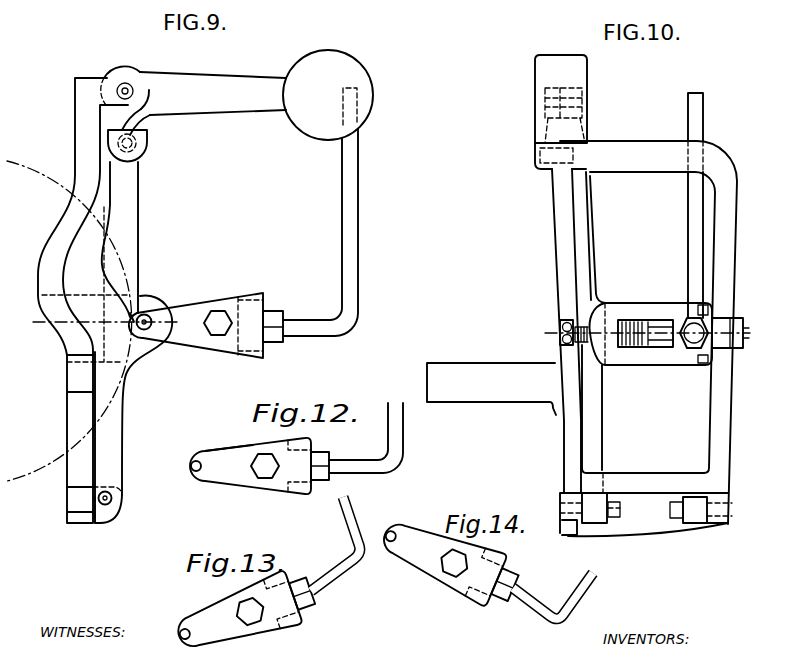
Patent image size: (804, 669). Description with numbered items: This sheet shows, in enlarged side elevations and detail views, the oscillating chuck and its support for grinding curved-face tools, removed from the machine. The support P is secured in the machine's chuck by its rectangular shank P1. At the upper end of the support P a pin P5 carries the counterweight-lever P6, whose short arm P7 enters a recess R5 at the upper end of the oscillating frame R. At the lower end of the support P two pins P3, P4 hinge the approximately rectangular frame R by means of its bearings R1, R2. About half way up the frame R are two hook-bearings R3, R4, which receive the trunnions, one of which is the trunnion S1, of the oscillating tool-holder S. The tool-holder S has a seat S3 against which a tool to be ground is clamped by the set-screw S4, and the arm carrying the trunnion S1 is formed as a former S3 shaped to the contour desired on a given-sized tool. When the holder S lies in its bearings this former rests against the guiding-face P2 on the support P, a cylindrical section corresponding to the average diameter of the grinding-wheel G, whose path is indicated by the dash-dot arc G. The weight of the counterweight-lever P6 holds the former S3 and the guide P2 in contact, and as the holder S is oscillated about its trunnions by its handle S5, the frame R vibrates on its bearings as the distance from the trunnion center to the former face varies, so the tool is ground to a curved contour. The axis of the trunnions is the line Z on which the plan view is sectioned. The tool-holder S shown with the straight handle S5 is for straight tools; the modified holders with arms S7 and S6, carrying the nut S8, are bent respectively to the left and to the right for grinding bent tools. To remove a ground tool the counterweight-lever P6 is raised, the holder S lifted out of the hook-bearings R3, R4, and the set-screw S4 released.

In FIG. 9, the support P is at (84, 300).
In FIG. 10, the support P is at (560, 205).
In FIG. 9, the rectangular shank P1 is at (80, 433).
In FIG. 10, the rectangular shank P1 is at (491, 389).
In FIG. 9, the guiding-face P2 is at (132, 308).
In FIG. 9, the pin P3 is at (112, 498).
In FIG. 10, the pin P3 is at (561, 505).
In FIG. 10, the pin P4 is at (733, 508).
In FIG. 9, the pin P5 is at (125, 83).
In FIG. 10, the pin P5 is at (587, 103).
In FIG. 9, the counterweight-lever P6 is at (238, 95).
In FIG. 10, the counterweight-lever P6 is at (583, 74).
In FIG. 9, the short arm P7 is at (144, 110).
In FIG. 10, the short arm P7 is at (535, 140).
In FIG. 9, the oscillating frame R is at (120, 239).
In FIG. 10, the oscillating frame R is at (648, 338).
In FIG. 10, the bearing R1 is at (568, 533).
In FIG. 10, the bearing R2 is at (714, 537).
In FIG. 9, the hook-bearing R3 is at (155, 352).
In FIG. 10, the hook-bearing R3 is at (584, 358).
In FIG. 10, the hook-bearing R4 is at (720, 340).
In FIG. 9, the recess R5 is at (140, 143).
In FIG. 10, the recess R5 is at (538, 160).
In FIG. 9, the oscillating tool-holder S is at (210, 333).
In FIG. 12, the oscillating tool-holder S is at (259, 466).
In FIG. 10, the oscillating tool-holder S is at (651, 331).
In FIG. 9, the trunnion S1 is at (152, 318).
In FIG. 12, the trunnion S1 is at (229, 460).
In FIG. 9, the seat / former S3 is at (146, 314).
In FIG. 12, the seat / former S3 is at (178, 460).
In FIG. 9, the set-screw S4 is at (218, 323).
In FIG. 10, the set-screw S4 is at (562, 320).
In FIG. 9, the handle S5 is at (320, 212).
In FIG. 12, the handle S5 is at (376, 438).
In FIG. 10, the handle S5 is at (709, 205).
In FIG. 14, the bracket arm S6 is at (483, 563).
In FIG. 13, the bracket arm S7 is at (265, 580).
In FIG. 10, the nut S8 is at (680, 308).
In FIG. 9, the section line Z is at (105, 326).
In FIG. 10, the section line Z is at (650, 335).
In FIG. 9, the grinding-wheel G is at (69, 312).